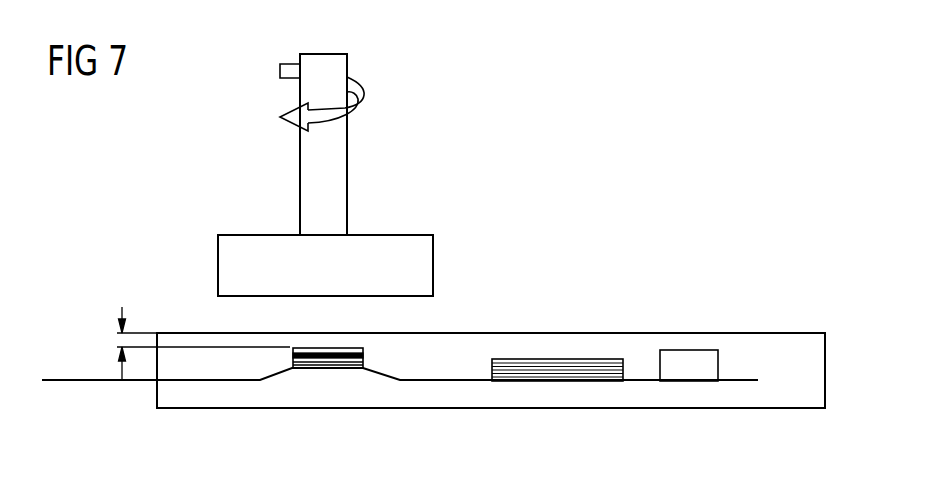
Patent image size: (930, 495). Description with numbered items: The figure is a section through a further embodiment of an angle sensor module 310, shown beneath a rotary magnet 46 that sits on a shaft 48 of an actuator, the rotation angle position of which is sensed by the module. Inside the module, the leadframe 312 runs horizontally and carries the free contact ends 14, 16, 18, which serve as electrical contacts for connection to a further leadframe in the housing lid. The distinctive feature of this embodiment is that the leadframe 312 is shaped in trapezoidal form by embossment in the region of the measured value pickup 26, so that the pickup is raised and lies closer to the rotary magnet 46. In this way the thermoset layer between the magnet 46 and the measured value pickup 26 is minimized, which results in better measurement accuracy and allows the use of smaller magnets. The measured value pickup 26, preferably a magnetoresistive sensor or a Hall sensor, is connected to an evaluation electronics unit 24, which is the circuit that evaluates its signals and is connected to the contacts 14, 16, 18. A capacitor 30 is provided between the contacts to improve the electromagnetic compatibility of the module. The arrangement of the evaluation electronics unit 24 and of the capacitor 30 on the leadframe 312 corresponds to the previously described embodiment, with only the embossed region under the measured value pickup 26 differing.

The shaft 48 is at (333, 167).
The rotary magnet 46 is at (433, 261).
The angle sensor module 310 is at (790, 333).
The free contact end 14 is at (400, 412).
The free contact end 16 is at (400, 412).
The free contact end 18 is at (103, 380).
The leadframe 312 is at (375, 373).
The measured value pickup 26 is at (363, 358).
The evaluation electronics unit 24 is at (560, 365).
The capacitor 30 is at (710, 367).